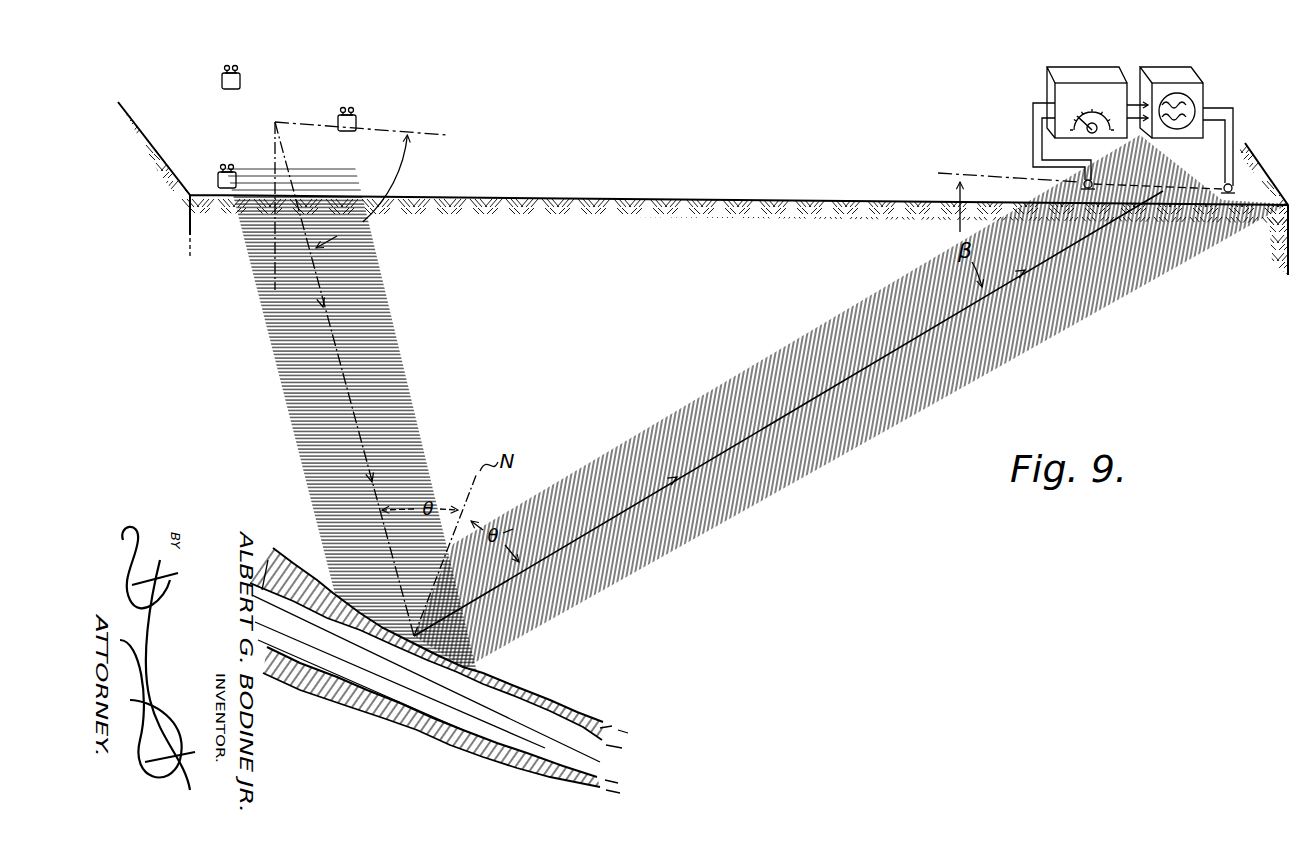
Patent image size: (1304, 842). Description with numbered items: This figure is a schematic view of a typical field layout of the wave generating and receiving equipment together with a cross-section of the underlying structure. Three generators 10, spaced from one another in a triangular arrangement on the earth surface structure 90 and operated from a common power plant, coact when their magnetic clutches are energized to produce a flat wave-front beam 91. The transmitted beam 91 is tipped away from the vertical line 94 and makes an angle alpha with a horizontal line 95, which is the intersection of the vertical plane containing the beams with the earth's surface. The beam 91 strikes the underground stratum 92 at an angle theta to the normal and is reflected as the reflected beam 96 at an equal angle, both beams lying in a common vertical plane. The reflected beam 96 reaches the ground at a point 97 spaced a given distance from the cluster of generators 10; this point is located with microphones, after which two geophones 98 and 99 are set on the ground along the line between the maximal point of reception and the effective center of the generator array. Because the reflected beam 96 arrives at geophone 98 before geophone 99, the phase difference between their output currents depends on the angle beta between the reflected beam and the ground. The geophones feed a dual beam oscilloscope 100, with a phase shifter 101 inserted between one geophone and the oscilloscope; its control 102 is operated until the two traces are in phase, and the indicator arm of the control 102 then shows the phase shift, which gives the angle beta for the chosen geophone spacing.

The generator 10 is at (247, 75).
The earth surface structure 90 is at (773, 202).
The flat wave-front beam 91 is at (402, 362).
The underground stratum 92 is at (317, 575).
The vertical line 94 is at (273, 263).
The horizontal line 95 is at (437, 133).
The reflected beam 96 is at (722, 383).
The point 97 is at (1163, 190).
The geophone 98 is at (1093, 181).
The geophone 99 is at (1233, 190).
The dual beam oscilloscope 100 is at (1177, 70).
The phase shifter 101 is at (1083, 75).
The control 102 is at (1087, 134).